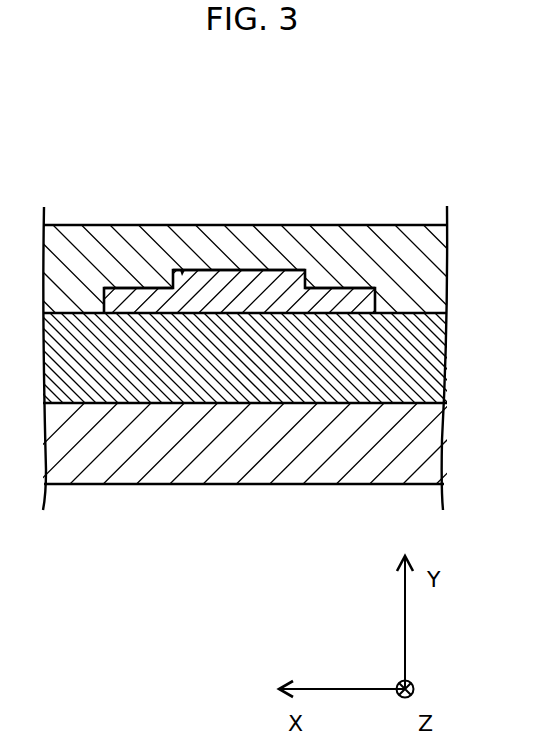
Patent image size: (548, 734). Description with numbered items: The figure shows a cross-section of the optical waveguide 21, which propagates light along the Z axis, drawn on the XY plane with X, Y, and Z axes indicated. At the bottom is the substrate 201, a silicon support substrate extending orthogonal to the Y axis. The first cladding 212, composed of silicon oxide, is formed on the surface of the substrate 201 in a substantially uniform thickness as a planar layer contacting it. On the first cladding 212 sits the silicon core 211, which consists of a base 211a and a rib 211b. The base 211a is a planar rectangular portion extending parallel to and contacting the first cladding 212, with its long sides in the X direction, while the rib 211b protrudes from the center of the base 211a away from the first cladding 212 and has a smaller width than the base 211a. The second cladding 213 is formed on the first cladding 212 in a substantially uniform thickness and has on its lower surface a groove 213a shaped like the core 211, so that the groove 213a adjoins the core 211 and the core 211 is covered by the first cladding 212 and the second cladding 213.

The optical waveguide 21 is at (388, 206).
The substrate 201 is at (78, 486).
The first cladding 212 is at (130, 405).
The second cladding 213 is at (62, 225).
The groove 213a is at (183, 275).
The core 211 is at (283, 270).
The base 211a is at (130, 288).
The rib 211b is at (227, 270).